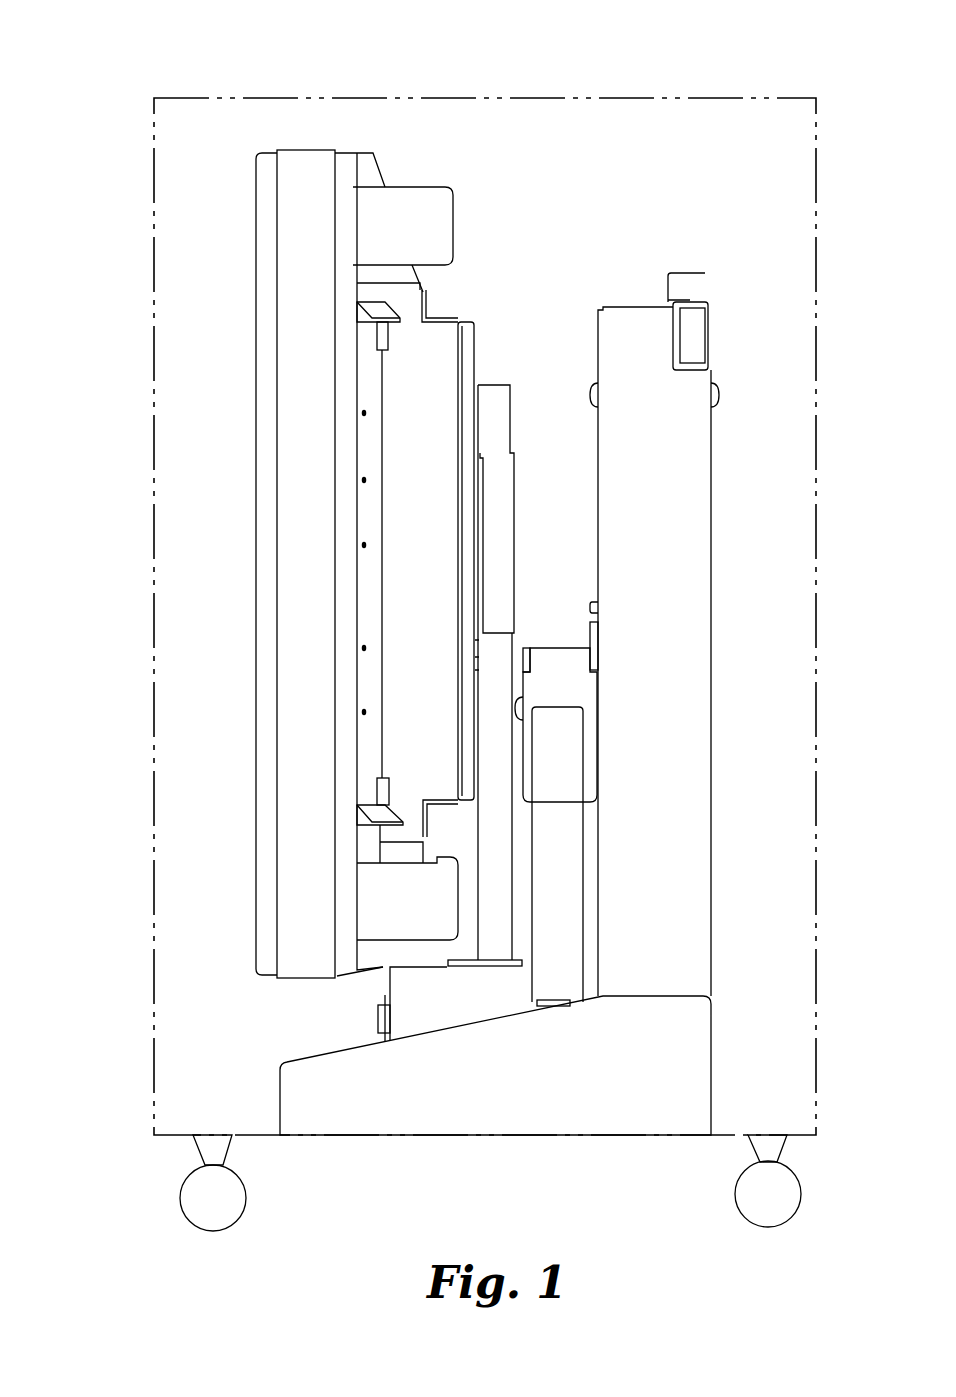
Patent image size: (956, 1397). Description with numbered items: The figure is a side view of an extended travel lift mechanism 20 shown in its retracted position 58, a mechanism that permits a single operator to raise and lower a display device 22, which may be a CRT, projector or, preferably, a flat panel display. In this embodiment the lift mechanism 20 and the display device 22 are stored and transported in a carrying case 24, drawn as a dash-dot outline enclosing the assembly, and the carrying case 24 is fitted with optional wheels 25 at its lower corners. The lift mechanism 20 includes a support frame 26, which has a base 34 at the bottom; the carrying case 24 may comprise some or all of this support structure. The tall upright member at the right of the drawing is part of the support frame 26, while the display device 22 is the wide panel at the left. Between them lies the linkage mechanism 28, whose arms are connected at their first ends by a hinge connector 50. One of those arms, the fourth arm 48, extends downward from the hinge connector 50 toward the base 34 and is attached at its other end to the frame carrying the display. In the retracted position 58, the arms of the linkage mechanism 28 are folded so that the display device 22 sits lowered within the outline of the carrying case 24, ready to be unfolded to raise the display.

The extended travel lift mechanism 20 is at (391, 90).
The display device 22 is at (254, 356).
The carrying case 24 is at (568, 96).
The wheels 25 is at (188, 1197).
The support frame 26 is at (718, 805).
The linkage mechanism 28 is at (557, 310).
The base 34 is at (553, 1120).
The fourth arm 48 is at (573, 877).
The hinge connector 50 is at (572, 675).
The retracted position 58 is at (154, 196).